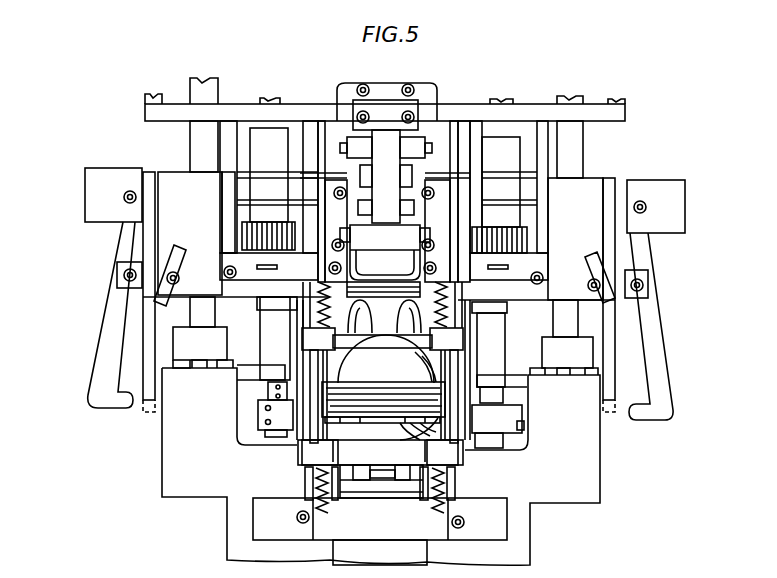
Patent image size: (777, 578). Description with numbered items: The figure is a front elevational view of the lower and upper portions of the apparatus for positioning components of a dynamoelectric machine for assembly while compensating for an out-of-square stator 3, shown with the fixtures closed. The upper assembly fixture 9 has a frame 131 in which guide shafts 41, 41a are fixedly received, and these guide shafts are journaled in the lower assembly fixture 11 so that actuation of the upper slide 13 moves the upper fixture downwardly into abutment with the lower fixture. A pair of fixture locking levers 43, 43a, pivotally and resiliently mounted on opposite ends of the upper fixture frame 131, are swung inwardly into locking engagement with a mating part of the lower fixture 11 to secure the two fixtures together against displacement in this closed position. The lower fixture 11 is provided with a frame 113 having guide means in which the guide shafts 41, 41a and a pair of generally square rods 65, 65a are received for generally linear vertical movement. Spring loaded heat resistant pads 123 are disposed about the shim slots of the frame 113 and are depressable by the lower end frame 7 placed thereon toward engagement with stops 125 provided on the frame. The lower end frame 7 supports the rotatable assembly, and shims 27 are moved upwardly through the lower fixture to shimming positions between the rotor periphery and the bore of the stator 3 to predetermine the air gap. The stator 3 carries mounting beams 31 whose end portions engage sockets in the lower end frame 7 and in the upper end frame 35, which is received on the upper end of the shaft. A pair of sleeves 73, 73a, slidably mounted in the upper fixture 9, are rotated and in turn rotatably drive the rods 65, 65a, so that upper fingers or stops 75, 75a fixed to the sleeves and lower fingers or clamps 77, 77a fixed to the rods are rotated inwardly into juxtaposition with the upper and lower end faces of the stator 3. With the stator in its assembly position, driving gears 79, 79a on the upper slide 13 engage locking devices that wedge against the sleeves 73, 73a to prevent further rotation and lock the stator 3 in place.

The stator 3 is at (368, 390).
The lower end frame 7 is at (312, 450).
The upper assembly fixture 9 is at (622, 167).
The lower assembly fixture 11 is at (130, 504).
The upper slide 13 is at (522, 102).
The shims 27 is at (384, 315).
The mounting beams 31 is at (450, 428).
The upper end frame 35 is at (463, 342).
The guide shaft 41 is at (203, 86).
The guide shaft 41a is at (571, 101).
The fixture locking lever 43 is at (105, 337).
The fixture locking lever 43a is at (663, 352).
The rod 65 is at (268, 393).
The rod 65a is at (503, 398).
The sleeve 73 is at (268, 323).
The sleeve 73a is at (493, 365).
The upper finger 75 is at (250, 378).
The upper finger 75a is at (527, 381).
The lower finger 77 is at (258, 418).
The lower finger 77a is at (524, 425).
The driving gear 79 is at (248, 236).
The driving gear 79a is at (520, 244).
The fixture frame 113 is at (197, 490).
The heat resistant pad 123 is at (465, 470).
The stop 125 is at (453, 491).
The fixture frame 131 is at (173, 180).